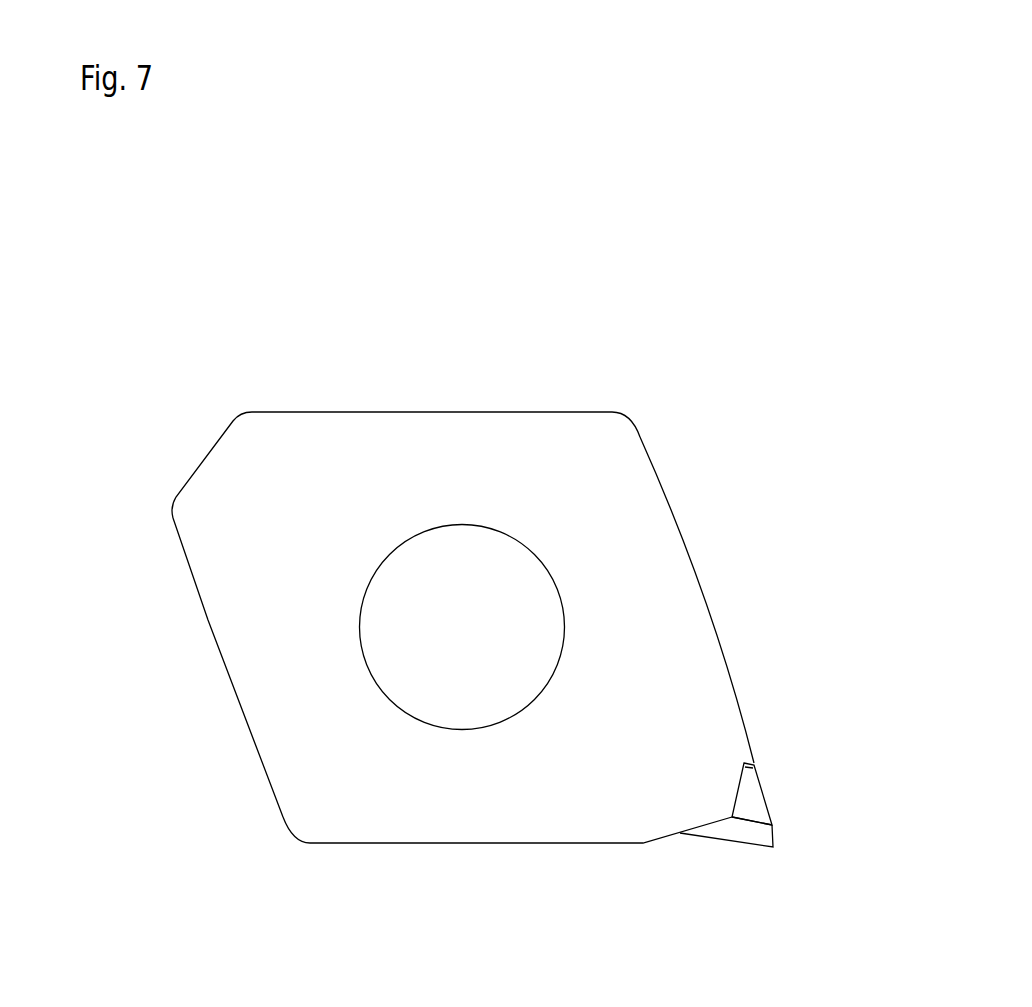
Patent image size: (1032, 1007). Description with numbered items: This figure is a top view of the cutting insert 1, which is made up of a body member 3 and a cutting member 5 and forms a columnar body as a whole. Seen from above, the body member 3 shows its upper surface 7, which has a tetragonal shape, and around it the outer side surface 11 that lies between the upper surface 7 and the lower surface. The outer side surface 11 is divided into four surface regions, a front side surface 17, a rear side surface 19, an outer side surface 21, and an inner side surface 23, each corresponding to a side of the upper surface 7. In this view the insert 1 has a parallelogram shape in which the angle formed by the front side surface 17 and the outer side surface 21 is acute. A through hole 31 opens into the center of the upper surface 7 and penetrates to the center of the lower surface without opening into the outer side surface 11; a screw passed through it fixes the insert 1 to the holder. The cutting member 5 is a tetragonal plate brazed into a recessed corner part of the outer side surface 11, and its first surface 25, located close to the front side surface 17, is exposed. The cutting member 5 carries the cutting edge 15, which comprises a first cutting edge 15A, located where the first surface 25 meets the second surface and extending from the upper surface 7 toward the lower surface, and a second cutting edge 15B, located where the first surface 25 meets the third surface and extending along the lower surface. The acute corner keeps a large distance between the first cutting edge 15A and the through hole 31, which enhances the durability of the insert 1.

The insert 1 is at (277, 340).
The body member 3 is at (225, 498).
The cutting member 5 is at (732, 833).
The upper surface 7 is at (620, 472).
The outer side surface 11 is at (437, 608).
The cutting edge 15 is at (732, 866).
The first cutting edge 15A is at (763, 813).
The second cutting edge 15B is at (702, 838).
The front side surface 17 is at (395, 843).
The rear side surface 19 is at (518, 412).
The outer side surface 21 is at (710, 618).
The inner side surface 23 is at (227, 673).
The first surface 25 is at (740, 829).
The through hole 31 is at (378, 688).